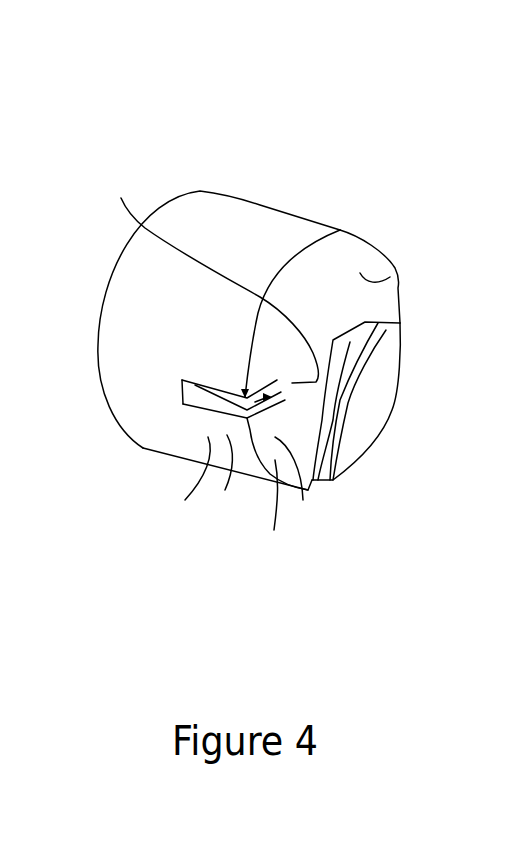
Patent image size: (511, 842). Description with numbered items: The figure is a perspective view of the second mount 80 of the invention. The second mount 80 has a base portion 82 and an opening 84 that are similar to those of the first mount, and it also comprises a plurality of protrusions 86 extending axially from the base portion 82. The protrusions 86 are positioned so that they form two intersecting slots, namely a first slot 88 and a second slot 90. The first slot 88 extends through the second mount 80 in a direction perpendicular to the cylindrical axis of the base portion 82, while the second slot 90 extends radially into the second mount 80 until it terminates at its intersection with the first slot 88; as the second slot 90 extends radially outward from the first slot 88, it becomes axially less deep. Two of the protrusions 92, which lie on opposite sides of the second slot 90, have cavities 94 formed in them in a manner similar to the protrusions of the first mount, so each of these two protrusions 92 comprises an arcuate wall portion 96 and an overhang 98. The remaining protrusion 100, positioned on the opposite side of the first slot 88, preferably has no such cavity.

The second mount 80 is at (268, 153).
The base portion 82 is at (123, 342).
The opening 84 is at (371, 473).
The protrusions 86 is at (255, 216).
The first slot 88 is at (398, 288).
The second slot 90 is at (317, 457).
The protrusions 92 is at (390, 358).
The cavities 94 is at (255, 328).
The arcuate wall portion 96 is at (402, 347).
The overhang 98 is at (362, 410).
The remaining protrusion 100 is at (386, 283).